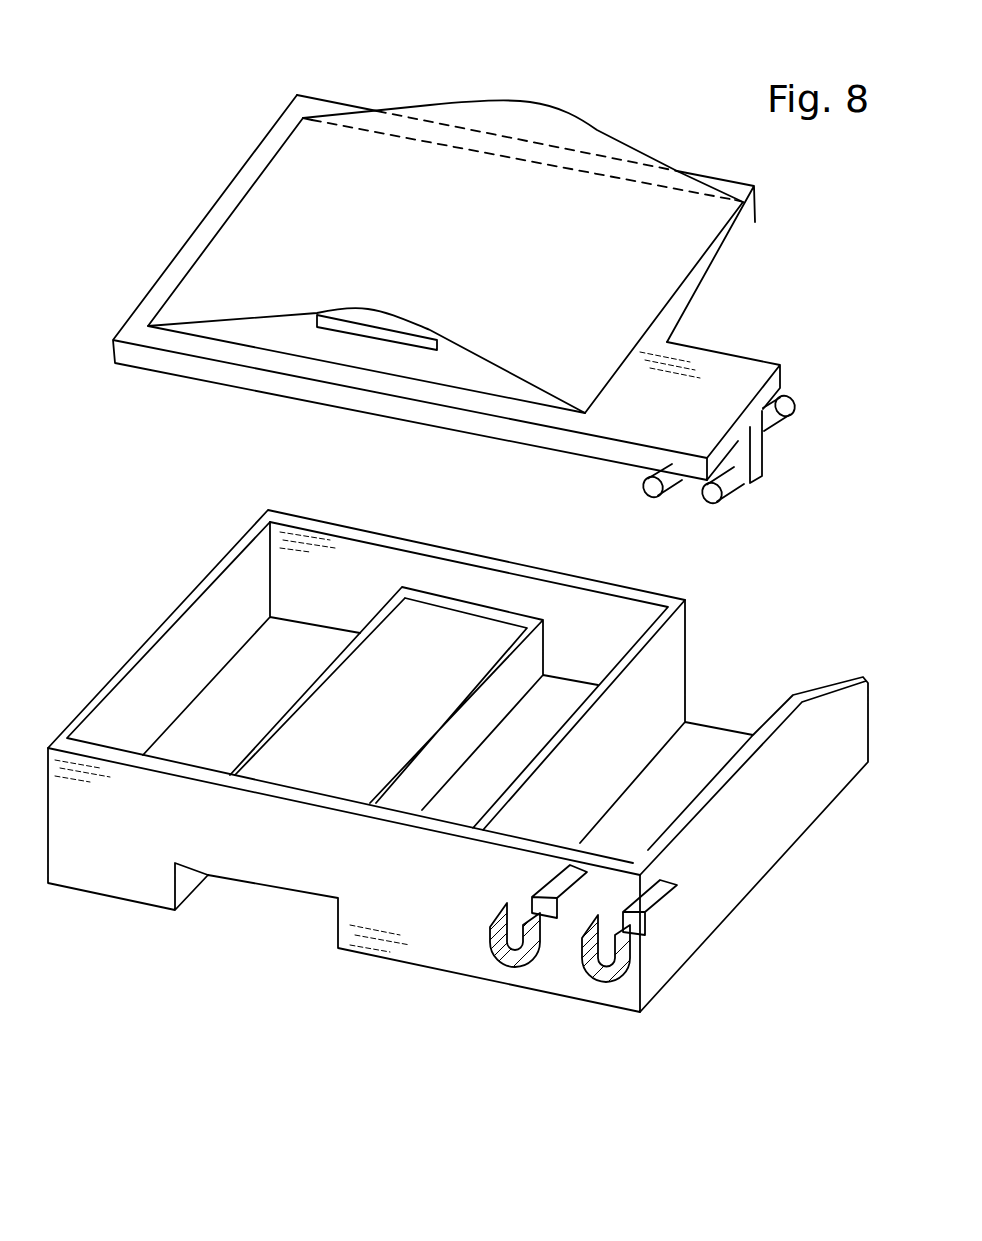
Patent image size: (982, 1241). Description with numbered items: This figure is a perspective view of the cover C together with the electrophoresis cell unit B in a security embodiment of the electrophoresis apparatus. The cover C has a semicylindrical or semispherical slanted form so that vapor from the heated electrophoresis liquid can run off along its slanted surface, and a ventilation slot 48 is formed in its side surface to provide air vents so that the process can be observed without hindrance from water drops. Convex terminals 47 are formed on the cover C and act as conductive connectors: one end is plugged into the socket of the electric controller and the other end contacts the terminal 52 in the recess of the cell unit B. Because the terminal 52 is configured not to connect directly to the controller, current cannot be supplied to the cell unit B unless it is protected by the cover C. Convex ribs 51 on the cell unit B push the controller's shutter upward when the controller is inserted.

The cover C is at (630, 131).
The electrophoresis cell unit B is at (147, 608).
The convex terminals 47 is at (782, 430).
The ventilation slot 48 is at (318, 328).
The convex ribs 51 is at (668, 905).
The terminal 52 is at (597, 973).